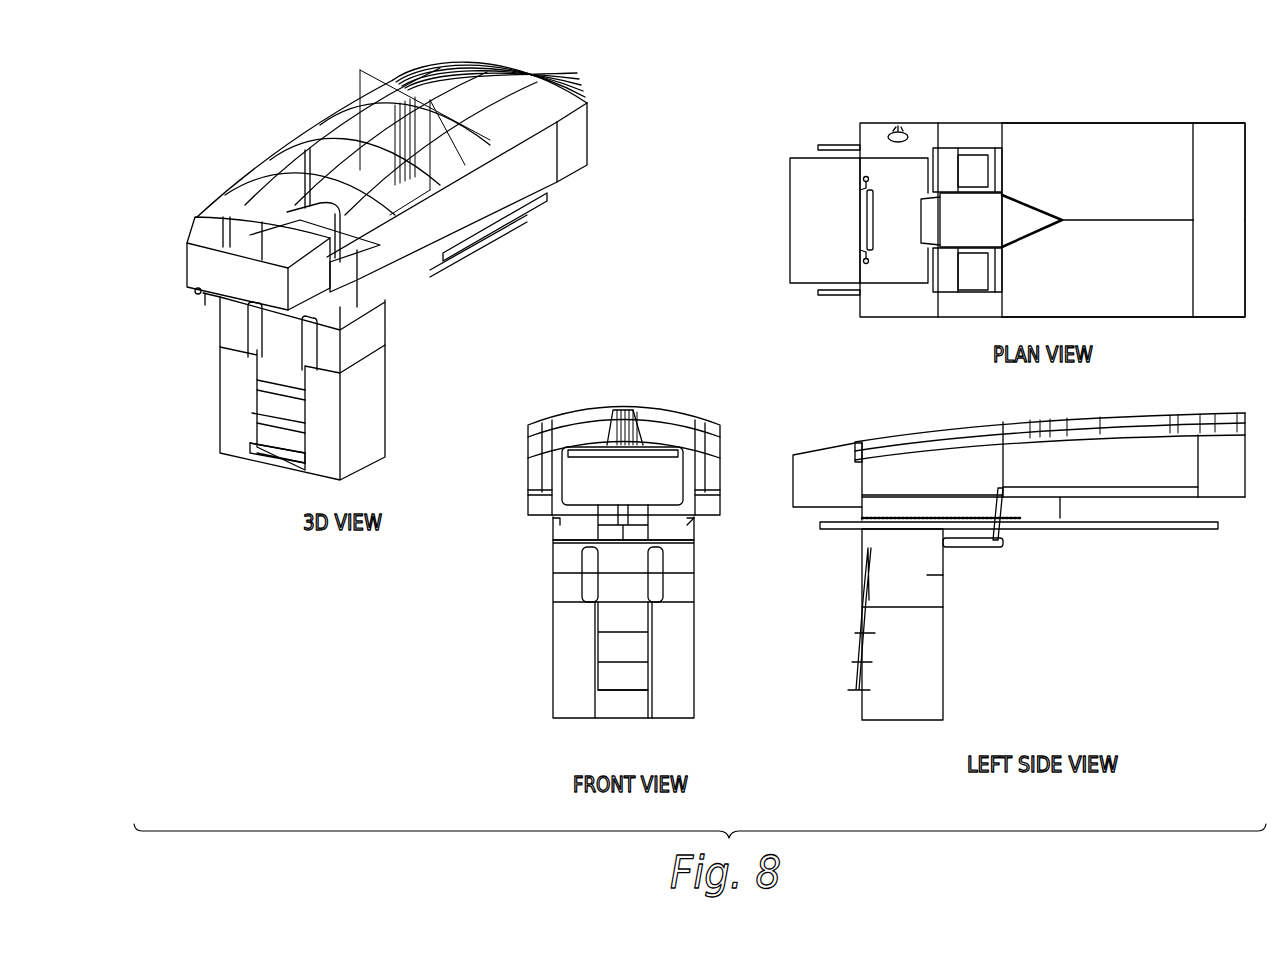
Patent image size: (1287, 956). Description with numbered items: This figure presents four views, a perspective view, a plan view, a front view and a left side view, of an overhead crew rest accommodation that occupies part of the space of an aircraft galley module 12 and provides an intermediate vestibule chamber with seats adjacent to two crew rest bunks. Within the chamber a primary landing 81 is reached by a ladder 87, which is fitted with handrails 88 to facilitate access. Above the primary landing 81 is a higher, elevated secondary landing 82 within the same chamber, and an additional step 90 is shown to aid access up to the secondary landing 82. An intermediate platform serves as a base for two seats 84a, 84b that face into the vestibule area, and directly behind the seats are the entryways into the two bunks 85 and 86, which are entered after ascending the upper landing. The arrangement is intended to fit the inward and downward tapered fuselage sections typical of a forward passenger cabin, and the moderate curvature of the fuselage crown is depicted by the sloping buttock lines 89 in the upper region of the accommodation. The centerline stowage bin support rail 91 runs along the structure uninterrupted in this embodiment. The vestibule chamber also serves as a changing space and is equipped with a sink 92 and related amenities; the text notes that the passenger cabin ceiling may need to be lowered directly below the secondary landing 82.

The galley module 12 is at (370, 415).
The primary landing 81 is at (235, 345).
The secondary landing 82 is at (680, 544).
The seat 84a is at (975, 165).
The seat 84b is at (972, 285).
The bunk 85 is at (1107, 160).
The bunk 86 is at (1105, 290).
The ladder 87 is at (270, 460).
The handrails 88 is at (248, 330).
The sloping buttock lines 89 is at (905, 432).
The additional step 90 is at (935, 575).
The centerline stowage bin support rail 91 is at (1133, 529).
The sink 92 is at (912, 130).